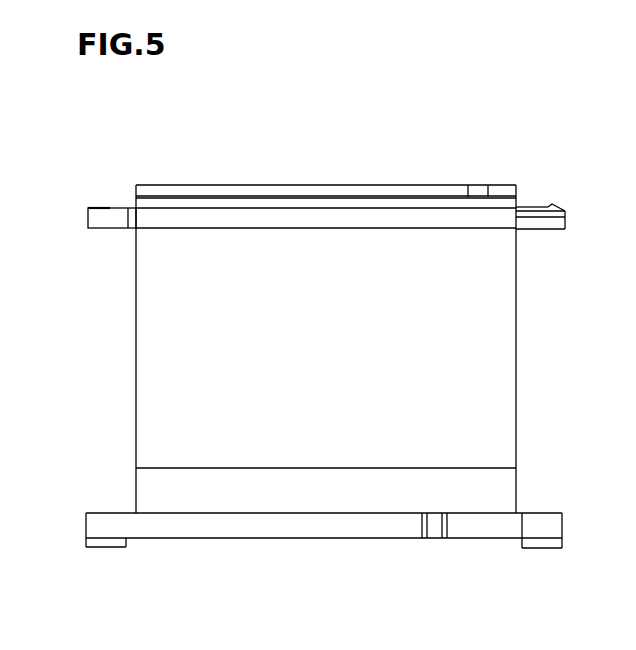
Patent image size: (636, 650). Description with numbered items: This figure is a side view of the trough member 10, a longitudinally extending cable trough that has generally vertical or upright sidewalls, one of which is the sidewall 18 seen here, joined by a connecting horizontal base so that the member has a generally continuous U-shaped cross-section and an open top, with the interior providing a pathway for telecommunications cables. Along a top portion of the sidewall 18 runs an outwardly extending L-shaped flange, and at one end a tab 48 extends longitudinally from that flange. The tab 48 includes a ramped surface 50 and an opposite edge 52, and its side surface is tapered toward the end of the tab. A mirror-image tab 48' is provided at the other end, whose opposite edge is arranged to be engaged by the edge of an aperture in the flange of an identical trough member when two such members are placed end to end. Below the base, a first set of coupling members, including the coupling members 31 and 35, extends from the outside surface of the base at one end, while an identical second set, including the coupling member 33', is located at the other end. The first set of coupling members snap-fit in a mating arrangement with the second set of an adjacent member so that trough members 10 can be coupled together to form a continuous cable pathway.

The trough member 10 is at (228, 153).
The sidewall 18 is at (338, 351).
The coupling member 31 is at (560, 523).
The coupling member 33' is at (557, 575).
The coupling member 35 is at (97, 523).
The tab 48 is at (74, 232).
The tab 48' is at (569, 196).
The ramped surface 50 is at (97, 207).
The opposite edge 52 is at (101, 207).